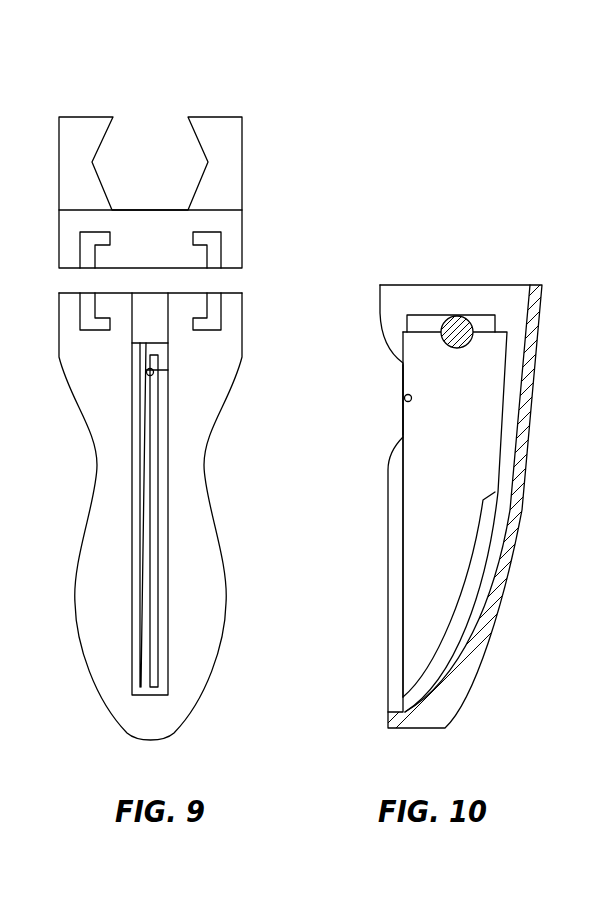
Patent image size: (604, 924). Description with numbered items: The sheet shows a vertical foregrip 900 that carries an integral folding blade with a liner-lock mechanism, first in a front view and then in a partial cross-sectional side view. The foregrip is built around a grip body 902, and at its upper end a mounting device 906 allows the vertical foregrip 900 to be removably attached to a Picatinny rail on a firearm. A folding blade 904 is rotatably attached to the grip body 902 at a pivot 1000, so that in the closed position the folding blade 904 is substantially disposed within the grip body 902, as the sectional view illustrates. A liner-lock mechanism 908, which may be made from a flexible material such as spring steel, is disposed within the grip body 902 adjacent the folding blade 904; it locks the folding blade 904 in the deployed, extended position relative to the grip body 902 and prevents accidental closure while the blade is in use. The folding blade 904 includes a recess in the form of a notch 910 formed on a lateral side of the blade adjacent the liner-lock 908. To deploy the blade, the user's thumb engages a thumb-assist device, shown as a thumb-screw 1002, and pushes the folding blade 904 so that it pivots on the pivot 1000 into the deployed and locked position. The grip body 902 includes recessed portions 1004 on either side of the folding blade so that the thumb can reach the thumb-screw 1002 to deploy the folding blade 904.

In FIG. 9, the vertical foregrip 900 is at (271, 84).
In FIG. 10, the vertical foregrip 900 is at (515, 149).
In FIG. 9, the grip body 902 is at (201, 618).
In FIG. 10, the grip body 902 is at (495, 593).
In FIG. 9, the folding blade 904 is at (154, 481).
In FIG. 10, the folding blade 904 is at (472, 461).
In FIG. 9, the mounting device 906 is at (228, 247).
In FIG. 9, the liner-lock mechanism 908 is at (140, 427).
In FIG. 10, the liner-lock mechanism 908 is at (427, 322).
In FIG. 9, the notch 910 is at (153, 376).
In FIG. 10, the pivot 1000 is at (467, 320).
In FIG. 10, the thumb-screw 1002 is at (405, 400).
In FIG. 10, the recessed portions 1004 is at (378, 377).